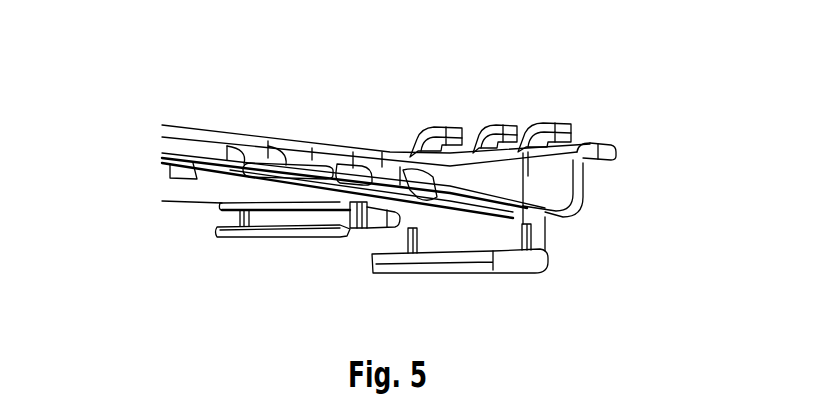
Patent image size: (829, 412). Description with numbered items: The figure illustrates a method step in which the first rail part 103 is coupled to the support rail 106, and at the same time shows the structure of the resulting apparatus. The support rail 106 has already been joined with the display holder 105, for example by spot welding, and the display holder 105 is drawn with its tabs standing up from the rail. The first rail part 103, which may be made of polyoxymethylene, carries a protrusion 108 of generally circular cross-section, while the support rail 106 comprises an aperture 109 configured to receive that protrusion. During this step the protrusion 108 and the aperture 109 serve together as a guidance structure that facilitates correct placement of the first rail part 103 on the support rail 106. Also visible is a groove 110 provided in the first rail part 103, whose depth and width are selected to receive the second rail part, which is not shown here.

The first rail part 103 is at (312, 228).
The display holder 105 is at (479, 185).
The support rail 106 is at (483, 235).
The protrusion 108 is at (378, 227).
The aperture 109 is at (417, 240).
The groove 110 is at (317, 220).